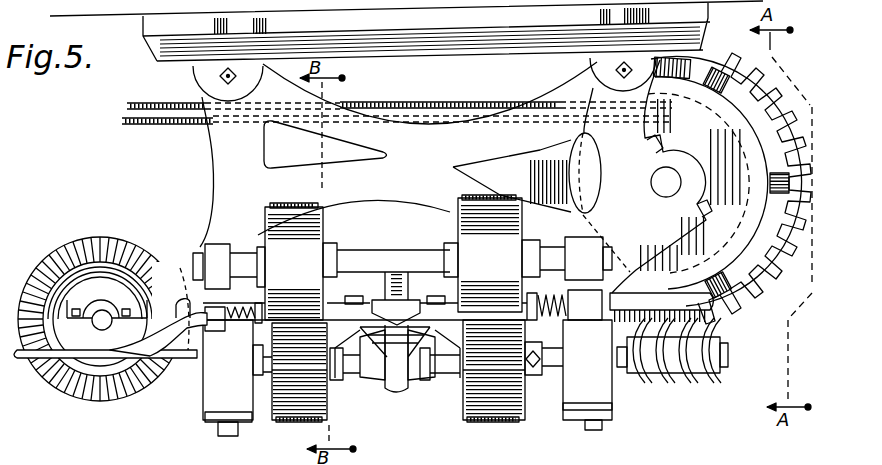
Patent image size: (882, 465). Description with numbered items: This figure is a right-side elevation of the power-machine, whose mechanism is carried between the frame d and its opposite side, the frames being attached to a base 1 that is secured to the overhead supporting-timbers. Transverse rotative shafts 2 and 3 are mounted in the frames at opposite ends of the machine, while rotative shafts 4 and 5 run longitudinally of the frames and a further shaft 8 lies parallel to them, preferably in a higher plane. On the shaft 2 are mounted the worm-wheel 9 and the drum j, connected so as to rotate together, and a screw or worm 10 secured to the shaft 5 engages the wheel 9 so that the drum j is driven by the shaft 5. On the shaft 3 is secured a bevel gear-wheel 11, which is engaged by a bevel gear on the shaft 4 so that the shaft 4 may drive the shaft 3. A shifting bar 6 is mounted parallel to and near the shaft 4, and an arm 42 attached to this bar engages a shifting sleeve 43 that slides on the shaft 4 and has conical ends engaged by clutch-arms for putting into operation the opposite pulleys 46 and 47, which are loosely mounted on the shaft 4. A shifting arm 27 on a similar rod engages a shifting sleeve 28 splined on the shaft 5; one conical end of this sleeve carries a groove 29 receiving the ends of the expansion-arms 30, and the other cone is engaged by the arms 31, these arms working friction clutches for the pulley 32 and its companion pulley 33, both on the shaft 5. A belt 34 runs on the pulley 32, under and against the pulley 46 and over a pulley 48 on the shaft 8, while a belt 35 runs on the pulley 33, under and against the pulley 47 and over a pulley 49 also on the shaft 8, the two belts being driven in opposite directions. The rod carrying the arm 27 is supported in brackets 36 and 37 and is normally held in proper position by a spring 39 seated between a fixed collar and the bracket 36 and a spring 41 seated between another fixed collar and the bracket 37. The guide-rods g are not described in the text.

The base 1 is at (441, 54).
The guide rods g is at (148, 103).
The frame d is at (214, 185).
The drum j is at (692, 186).
The worm-wheel 9 is at (747, 298).
The rotative shaft 2 is at (663, 197).
The pulley 49 is at (294, 263).
The pulley 48 is at (490, 255).
The belt 35 is at (288, 204).
The belt 34 is at (477, 198).
The pulley 33 is at (268, 422).
The pulley 32 is at (527, 413).
The shaft 8 is at (410, 256).
The rotative shaft 4 is at (354, 298).
The arm 42 is at (392, 271).
The shifting sleeve 43 is at (414, 301).
The shifting arm 27 is at (396, 396).
The shifting sleeve 28 is at (426, 388).
The groove 29 is at (374, 390).
The expansion-arms 30 is at (352, 376).
The arms 31 is at (440, 376).
The spring 41 is at (233, 333).
The pulley 47 is at (268, 354).
The pulley 46 is at (546, 322).
The bracket 37 is at (200, 365).
The spring 39 is at (562, 318).
The bracket 36 is at (599, 321).
The rotative shaft 5 is at (557, 368).
The screw or worm 10 is at (650, 380).
The shifting bar 6 is at (20, 364).
The rotative shaft 3 is at (75, 248).
The bevel gear-wheel 11 is at (93, 407).